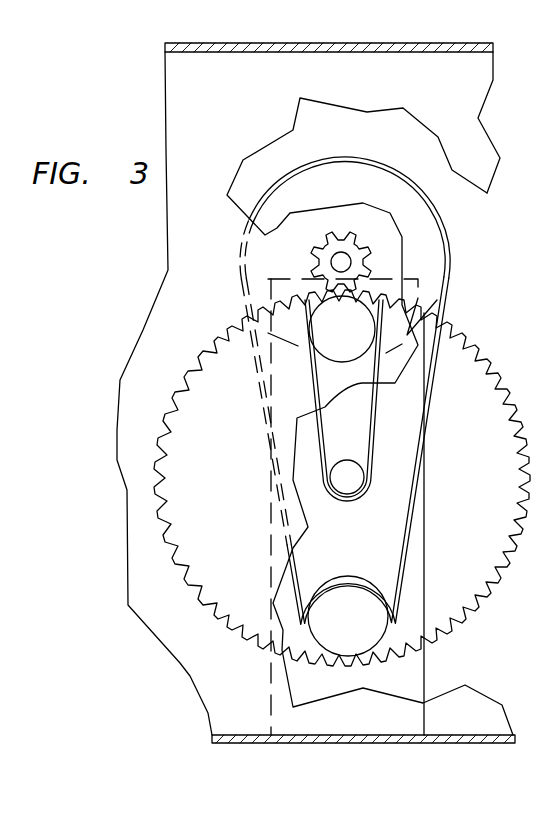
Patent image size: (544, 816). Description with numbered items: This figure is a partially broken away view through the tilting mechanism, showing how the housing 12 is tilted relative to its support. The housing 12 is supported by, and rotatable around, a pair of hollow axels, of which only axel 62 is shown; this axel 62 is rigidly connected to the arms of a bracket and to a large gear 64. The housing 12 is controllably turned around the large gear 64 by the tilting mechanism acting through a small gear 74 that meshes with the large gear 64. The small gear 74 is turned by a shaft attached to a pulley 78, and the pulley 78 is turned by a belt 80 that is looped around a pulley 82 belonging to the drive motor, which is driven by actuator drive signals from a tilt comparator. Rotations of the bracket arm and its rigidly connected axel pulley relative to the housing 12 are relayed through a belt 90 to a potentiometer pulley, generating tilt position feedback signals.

The housing 12 is at (410, 672).
The axel 62 is at (347, 479).
The large gear 64 is at (228, 587).
The small gear 74 is at (318, 253).
The pulley 78 is at (427, 241).
The belt 80 is at (432, 392).
The pulley 82 is at (357, 598).
The belt 90 is at (375, 419).